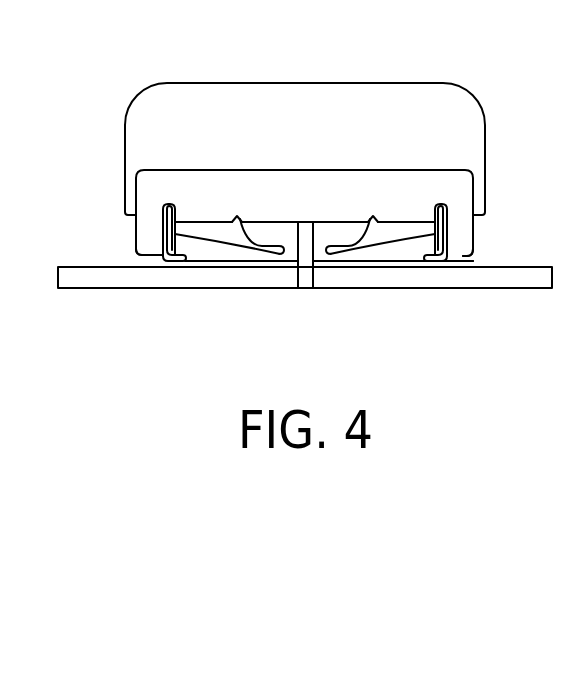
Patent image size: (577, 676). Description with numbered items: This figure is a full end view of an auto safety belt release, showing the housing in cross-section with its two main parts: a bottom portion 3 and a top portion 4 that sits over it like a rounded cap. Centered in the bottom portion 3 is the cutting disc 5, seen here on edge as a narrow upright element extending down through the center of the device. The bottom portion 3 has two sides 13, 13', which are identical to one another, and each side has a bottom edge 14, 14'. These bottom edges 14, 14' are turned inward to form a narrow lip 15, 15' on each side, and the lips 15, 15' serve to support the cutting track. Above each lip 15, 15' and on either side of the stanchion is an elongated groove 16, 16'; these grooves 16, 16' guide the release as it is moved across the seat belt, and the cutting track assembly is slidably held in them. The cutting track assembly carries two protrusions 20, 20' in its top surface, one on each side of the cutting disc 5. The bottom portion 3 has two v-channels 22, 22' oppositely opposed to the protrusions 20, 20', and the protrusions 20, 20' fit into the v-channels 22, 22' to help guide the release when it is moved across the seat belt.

The bottom portion 3 is at (333, 207).
The top portion 4 is at (473, 150).
The cutting disc 5 is at (305, 262).
The side 13 is at (79, 214).
The side 13' is at (523, 214).
The bottom edge 14 is at (120, 313).
The bottom edge 14' is at (492, 311).
The lip 15 is at (179, 298).
The lip 15' is at (435, 312).
The elongated groove 16 is at (159, 141).
The elongated groove 16' is at (476, 145).
The protrusion 20 is at (229, 289).
The protrusion 20' is at (380, 286).
The v-channel 22 is at (265, 130).
The v-channel 22' is at (401, 129).